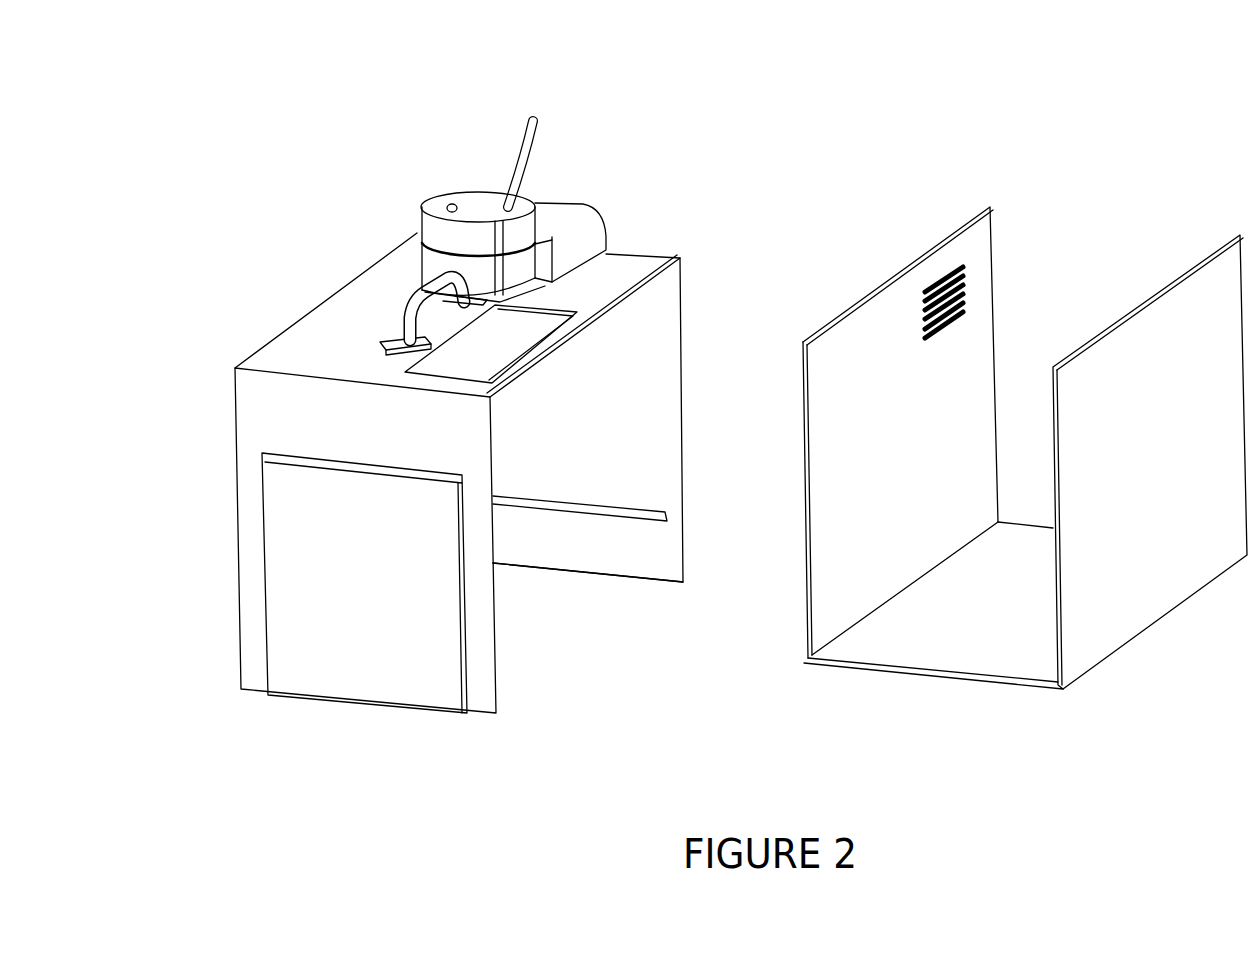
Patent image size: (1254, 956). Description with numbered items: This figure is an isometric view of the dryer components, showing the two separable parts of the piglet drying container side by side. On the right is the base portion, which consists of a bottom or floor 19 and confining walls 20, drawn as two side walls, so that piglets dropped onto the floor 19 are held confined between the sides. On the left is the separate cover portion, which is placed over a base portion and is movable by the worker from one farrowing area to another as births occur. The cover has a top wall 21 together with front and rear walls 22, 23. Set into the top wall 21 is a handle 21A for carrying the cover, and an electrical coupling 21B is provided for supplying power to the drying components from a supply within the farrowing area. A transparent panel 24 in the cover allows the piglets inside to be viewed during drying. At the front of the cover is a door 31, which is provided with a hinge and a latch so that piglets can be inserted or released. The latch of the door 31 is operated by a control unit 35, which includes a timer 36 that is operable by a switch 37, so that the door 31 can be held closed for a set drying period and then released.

The floor 19 is at (902, 631).
The confining walls 20 is at (860, 462).
The top wall 21 is at (285, 357).
The handle 21A is at (427, 290).
The electrical coupling 21B is at (527, 147).
The front wall 22 is at (480, 587).
The rear wall 23 is at (622, 412).
The transparent panel 24 is at (512, 334).
The door 31 is at (328, 655).
The control unit 35 is at (420, 229).
The timer 36 is at (403, 227).
The switch 37 is at (452, 204).